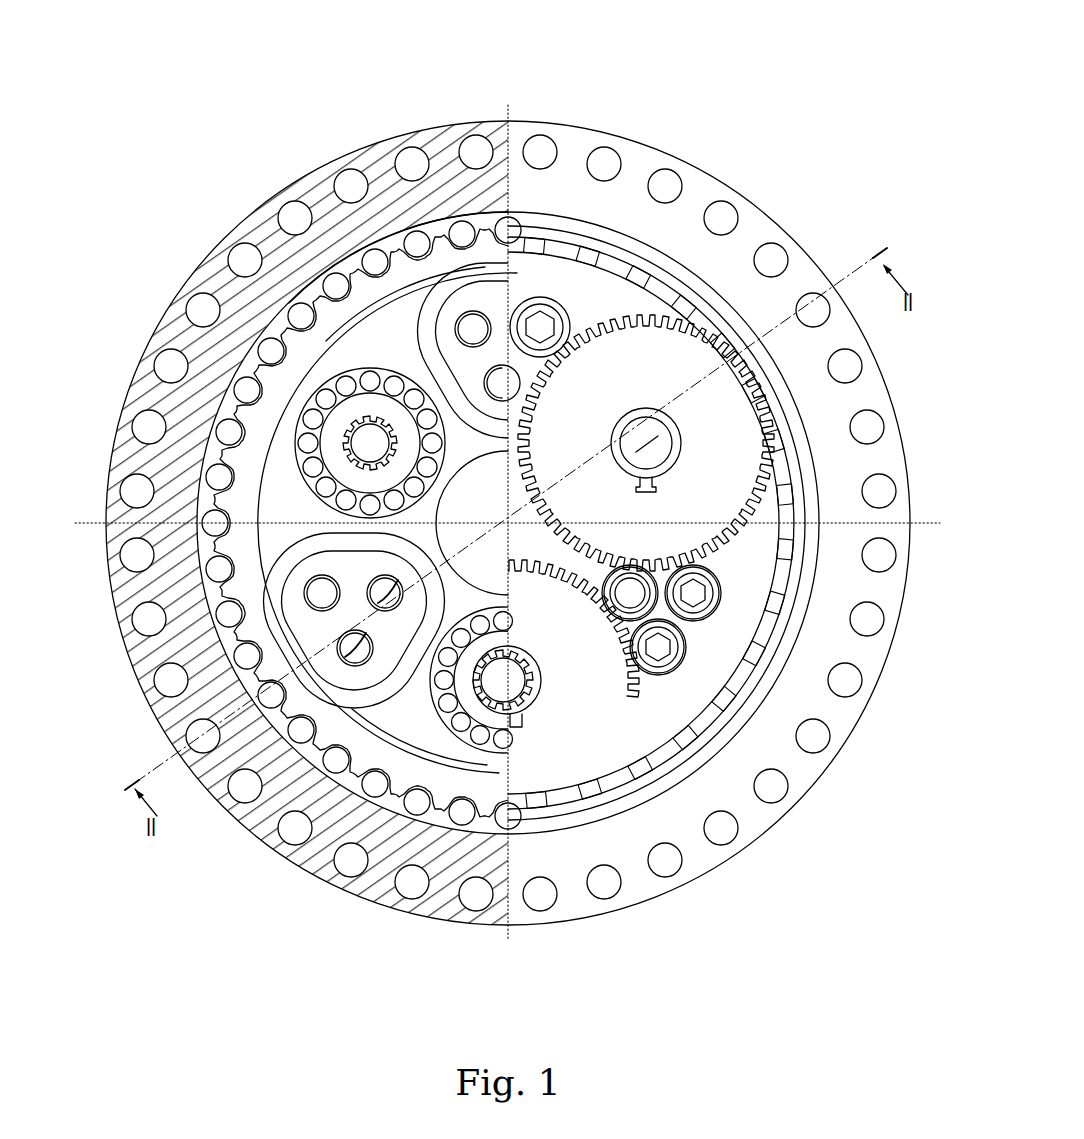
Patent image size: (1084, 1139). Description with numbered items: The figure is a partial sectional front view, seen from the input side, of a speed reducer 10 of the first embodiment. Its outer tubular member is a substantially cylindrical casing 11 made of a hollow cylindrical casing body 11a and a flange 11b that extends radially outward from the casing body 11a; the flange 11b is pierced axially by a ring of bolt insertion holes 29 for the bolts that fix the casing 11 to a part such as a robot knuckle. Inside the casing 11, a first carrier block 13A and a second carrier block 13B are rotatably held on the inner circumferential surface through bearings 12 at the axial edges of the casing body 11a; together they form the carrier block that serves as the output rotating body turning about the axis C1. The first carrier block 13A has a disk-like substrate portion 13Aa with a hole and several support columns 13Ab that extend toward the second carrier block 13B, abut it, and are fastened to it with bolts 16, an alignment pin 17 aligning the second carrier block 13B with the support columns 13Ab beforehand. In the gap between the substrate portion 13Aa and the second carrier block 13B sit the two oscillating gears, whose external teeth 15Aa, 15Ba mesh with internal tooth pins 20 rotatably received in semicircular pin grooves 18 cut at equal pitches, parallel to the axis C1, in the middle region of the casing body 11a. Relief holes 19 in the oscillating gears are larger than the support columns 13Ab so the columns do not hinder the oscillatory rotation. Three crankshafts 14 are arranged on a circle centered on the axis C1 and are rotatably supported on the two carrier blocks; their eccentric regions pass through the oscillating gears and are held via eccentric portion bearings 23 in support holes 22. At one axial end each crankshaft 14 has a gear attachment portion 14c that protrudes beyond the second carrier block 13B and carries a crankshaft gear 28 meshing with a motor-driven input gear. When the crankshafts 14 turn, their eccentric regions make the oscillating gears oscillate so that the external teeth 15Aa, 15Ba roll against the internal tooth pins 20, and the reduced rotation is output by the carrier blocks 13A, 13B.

The speed reducer 10 is at (748, 108).
The casing 11 is at (802, 230).
The casing body 11a is at (418, 230).
The flange 11b is at (335, 180).
The bearings 12 is at (625, 248).
The first carrier block 13A is at (250, 480).
The substrate portion 13Aa is at (222, 460).
The support columns 13Ab is at (658, 647).
The second carrier block 13B is at (768, 540).
The crankshafts 14 is at (473, 732).
The gear attachment portion 14c is at (538, 702).
The external teeth of second oscillating gear 15Ba is at (258, 722).
The external teeth of first oscillating gear 15Aa is at (387, 523).
The bolts 16 is at (692, 593).
The alignment pin 17 is at (630, 593).
The pin grooves 18 is at (332, 770).
The relief holes 19 is at (470, 285).
The internal tooth pins 20 is at (416, 800).
The support holes 22 is at (307, 413).
The eccentric portion bearings 23 is at (514, 724).
The crankshaft gear 28 is at (617, 747).
The bolt insertion holes 29 is at (780, 240).
The axis C1 is at (508, 523).